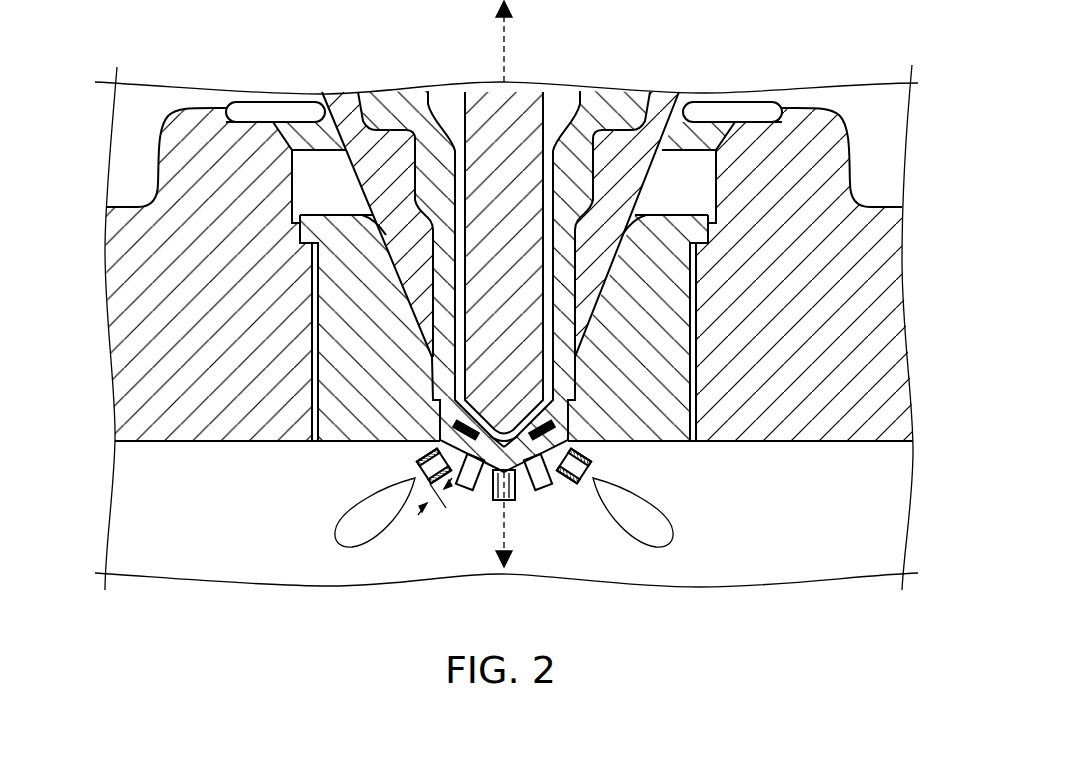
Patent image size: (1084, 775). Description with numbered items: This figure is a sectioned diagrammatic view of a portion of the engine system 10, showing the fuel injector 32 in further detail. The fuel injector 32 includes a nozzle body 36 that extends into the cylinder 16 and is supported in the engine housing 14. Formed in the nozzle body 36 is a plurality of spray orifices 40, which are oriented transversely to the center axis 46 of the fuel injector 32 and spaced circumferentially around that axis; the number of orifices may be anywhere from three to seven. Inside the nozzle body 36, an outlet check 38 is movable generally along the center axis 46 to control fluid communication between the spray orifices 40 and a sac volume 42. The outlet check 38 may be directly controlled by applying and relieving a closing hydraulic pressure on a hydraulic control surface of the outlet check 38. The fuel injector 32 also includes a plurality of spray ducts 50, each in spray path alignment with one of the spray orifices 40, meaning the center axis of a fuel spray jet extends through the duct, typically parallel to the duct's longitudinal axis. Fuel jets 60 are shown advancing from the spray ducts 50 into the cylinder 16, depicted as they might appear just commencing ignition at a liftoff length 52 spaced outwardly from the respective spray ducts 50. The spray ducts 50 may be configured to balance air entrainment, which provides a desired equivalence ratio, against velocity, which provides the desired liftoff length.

The engine system 10 is at (88, 100).
The engine housing 14 is at (892, 247).
The cylinder 16 is at (241, 505).
The fuel injector 32 is at (379, 90).
The nozzle body 36 is at (624, 87).
The outlet check 38 is at (474, 86).
The spray orifices 40 is at (449, 440).
The sac volume 42 is at (505, 430).
The center axis 46 is at (504, 50).
The spray ducts 50 is at (416, 456).
The liftoff length 52 is at (436, 499).
The fuel jets 60 is at (338, 528).